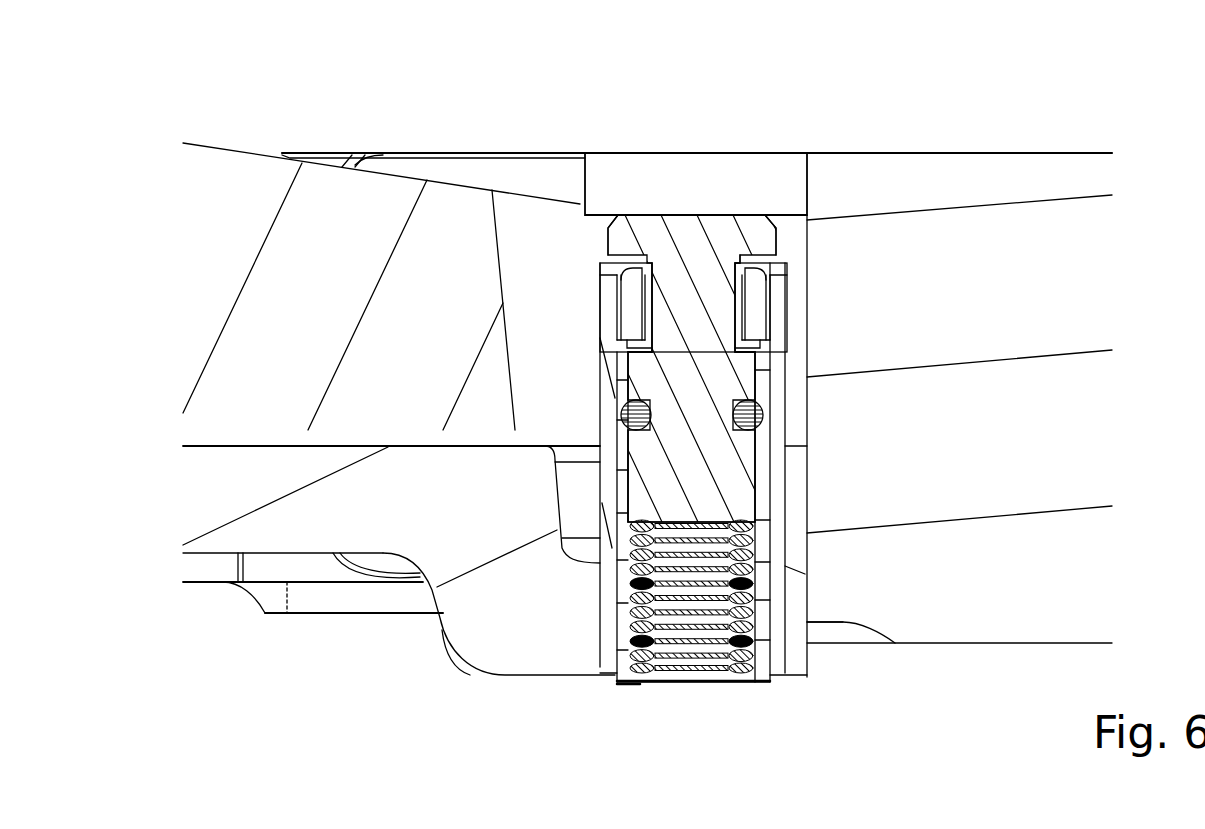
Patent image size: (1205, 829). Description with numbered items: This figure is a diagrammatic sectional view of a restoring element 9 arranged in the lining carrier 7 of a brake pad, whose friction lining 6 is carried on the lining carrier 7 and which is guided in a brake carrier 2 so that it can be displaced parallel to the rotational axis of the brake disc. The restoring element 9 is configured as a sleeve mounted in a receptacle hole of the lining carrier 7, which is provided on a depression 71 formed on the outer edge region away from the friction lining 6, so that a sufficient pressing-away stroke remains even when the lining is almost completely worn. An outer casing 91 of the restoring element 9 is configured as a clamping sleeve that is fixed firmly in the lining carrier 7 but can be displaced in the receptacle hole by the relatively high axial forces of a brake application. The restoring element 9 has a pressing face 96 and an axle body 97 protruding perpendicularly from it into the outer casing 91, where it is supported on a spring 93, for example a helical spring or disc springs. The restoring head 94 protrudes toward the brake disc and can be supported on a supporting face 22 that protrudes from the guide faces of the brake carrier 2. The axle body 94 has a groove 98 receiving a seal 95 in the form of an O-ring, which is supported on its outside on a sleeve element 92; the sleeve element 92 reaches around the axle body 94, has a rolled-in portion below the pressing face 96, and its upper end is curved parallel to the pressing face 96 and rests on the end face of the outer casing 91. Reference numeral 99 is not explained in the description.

The brake carrier 2 is at (1045, 227).
The friction lining 6 is at (229, 208).
The lining carrier 7 is at (223, 510).
The restoring element 9 is at (663, 708).
The supporting face 22 is at (662, 190).
The depression 71 is at (540, 655).
The outer casing 91 is at (774, 623).
The sleeve element 92 is at (762, 640).
The spring 93 is at (702, 640).
The restoring head 94 is at (708, 471).
The seal 95 is at (757, 412).
The pressing face 96 is at (742, 215).
The axle body 97 is at (687, 287).
The groove 98 is at (722, 364).
The sleeve 99 is at (622, 263).